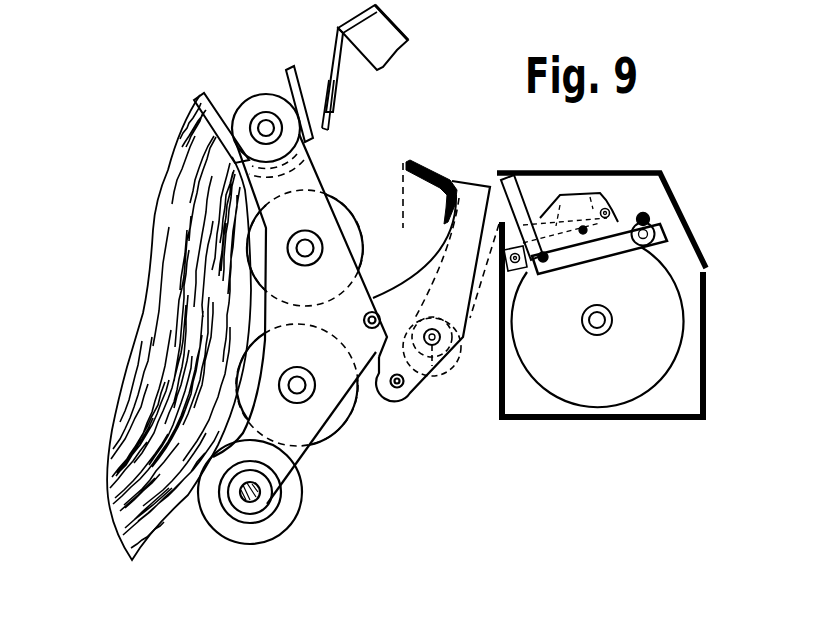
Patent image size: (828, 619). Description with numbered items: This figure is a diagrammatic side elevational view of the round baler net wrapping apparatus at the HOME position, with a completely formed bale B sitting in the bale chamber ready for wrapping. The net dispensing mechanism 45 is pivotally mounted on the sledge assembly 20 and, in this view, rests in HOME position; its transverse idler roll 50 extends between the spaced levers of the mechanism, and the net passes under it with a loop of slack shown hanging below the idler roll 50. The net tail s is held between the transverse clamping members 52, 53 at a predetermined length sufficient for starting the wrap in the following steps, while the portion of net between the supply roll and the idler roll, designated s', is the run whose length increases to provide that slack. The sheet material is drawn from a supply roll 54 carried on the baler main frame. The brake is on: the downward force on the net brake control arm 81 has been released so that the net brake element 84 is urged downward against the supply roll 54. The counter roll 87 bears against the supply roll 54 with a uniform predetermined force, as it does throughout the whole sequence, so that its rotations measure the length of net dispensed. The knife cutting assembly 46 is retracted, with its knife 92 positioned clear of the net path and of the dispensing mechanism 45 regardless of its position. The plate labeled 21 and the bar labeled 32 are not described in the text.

The sledge assembly 20 is at (324, 475).
The roller plate 21 is at (260, 268).
The guide bar 32 is at (288, 68).
The net dispensing mechanism 45 is at (410, 420).
The cutting assembly 46 is at (420, 31).
The idler roll 50 is at (430, 391).
The clamping member 52 is at (415, 163).
The clamping member 53 is at (433, 178).
The supply roll 54 is at (620, 366).
The net brake control arm 81 is at (523, 180).
The net brake element 84 is at (653, 213).
The counter roll 87 is at (622, 200).
The knife 92 is at (323, 114).
The bale B is at (183, 281).
The sheet material (net tail) S is at (380, 195).
The net portion between supply roll and idler roll S' is at (484, 310).